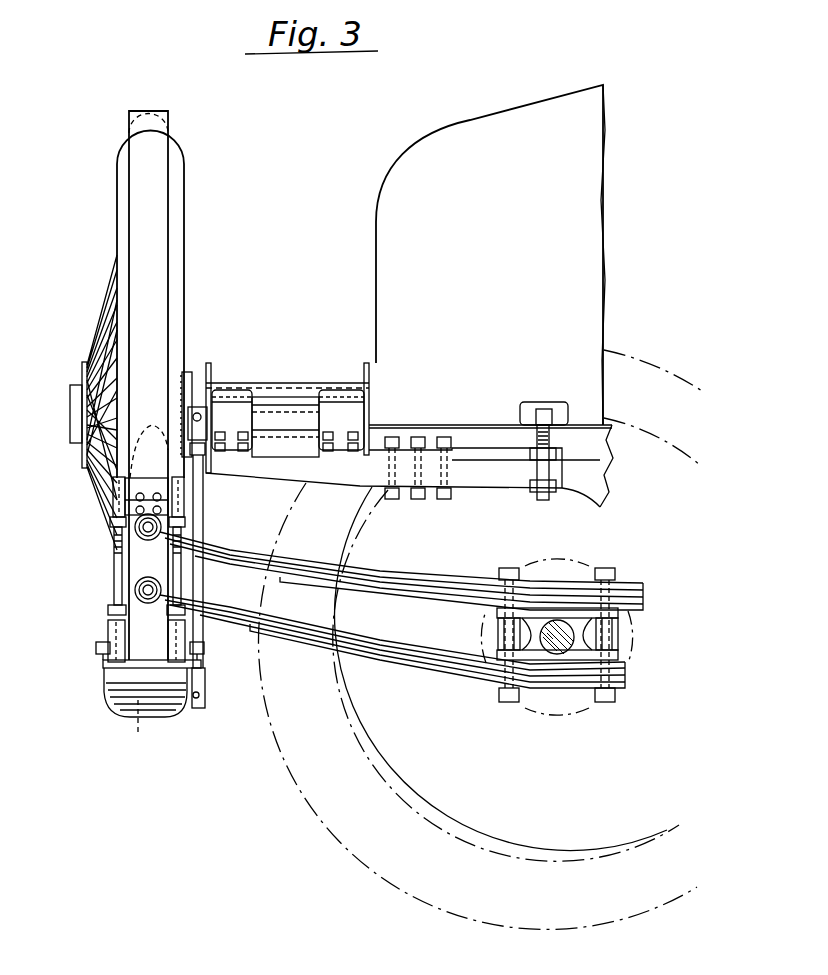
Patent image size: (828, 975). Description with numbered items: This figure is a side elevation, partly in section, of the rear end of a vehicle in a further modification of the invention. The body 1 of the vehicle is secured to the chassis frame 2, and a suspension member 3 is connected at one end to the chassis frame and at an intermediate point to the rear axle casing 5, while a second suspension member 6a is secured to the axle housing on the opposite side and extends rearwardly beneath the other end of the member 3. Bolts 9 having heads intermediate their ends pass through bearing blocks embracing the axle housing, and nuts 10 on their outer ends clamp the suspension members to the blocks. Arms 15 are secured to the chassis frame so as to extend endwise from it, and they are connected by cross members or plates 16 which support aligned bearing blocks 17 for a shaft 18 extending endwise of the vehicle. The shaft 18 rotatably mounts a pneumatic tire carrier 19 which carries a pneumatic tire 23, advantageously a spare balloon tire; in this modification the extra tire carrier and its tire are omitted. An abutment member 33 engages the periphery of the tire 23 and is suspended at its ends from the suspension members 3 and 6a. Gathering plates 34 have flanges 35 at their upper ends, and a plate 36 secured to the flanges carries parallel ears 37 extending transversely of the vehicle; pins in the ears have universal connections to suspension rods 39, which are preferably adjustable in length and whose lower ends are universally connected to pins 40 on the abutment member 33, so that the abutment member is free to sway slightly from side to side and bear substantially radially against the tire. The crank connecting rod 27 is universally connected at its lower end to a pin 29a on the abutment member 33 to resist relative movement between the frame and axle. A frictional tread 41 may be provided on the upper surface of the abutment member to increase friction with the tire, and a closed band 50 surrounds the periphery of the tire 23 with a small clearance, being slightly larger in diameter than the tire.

The body 1 is at (598, 336).
The chassis frame 2 is at (606, 489).
The suspension member 3 is at (428, 582).
The rear axle casing 5 is at (561, 689).
The suspension member 6a is at (400, 676).
The bolt 9 is at (506, 633).
The nut 10 is at (510, 567).
The arm 15 is at (283, 478).
The cross member 16 is at (223, 472).
The bearing block 17 is at (225, 395).
The shaft 18 is at (290, 404).
The pneumatic tire carrier 19 is at (96, 326).
The pneumatic tire 23 is at (172, 215).
The crank connecting rod 27 is at (205, 522).
The pin 29a is at (198, 700).
The abutment member 33 is at (118, 714).
The gathering plate 34 is at (138, 560).
The flange 35 is at (137, 528).
The plate 36 is at (151, 488).
The ear 37 is at (168, 447).
The suspension rod 39 is at (113, 600).
The pin 40 is at (98, 652).
The frictional tread 41 is at (147, 731).
The closed band 50 is at (172, 183).